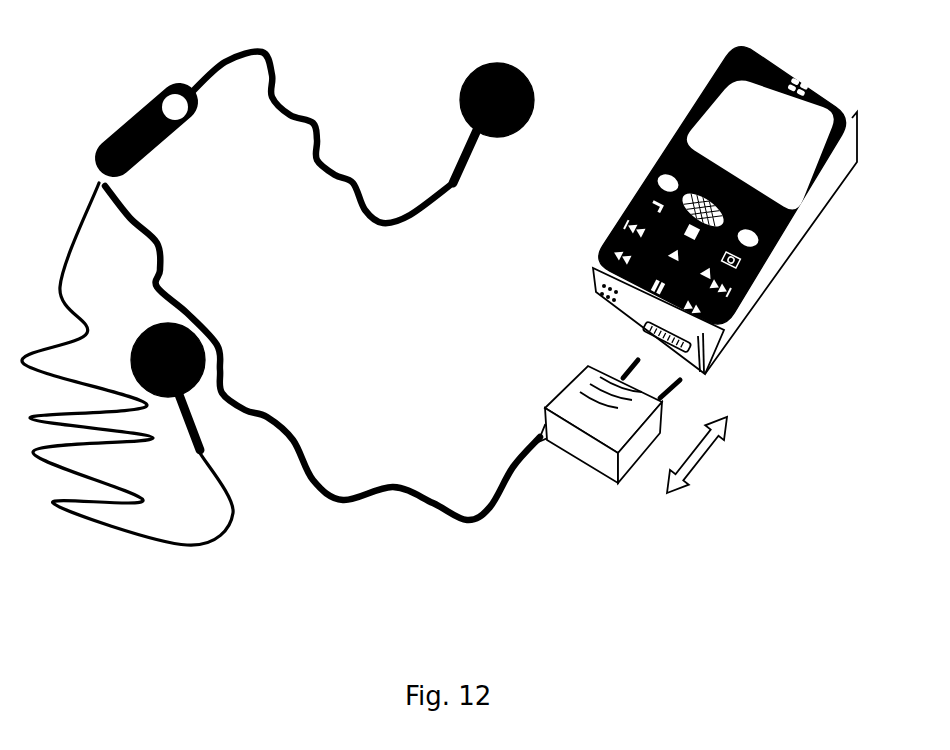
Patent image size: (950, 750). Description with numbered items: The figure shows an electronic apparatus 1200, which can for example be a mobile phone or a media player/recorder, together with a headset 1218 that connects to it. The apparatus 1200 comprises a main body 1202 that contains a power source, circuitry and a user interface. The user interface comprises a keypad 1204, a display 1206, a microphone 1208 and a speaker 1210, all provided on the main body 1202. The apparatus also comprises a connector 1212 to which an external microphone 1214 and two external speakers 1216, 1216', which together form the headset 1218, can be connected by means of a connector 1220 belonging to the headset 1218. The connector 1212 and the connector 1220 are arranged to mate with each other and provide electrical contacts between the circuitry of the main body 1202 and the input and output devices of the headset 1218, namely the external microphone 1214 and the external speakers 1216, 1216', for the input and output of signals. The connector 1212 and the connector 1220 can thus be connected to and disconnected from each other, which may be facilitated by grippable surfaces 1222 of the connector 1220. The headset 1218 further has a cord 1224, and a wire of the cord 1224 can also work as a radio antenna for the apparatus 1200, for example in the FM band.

The electronic apparatus 1200 is at (630, 530).
The main body 1202 is at (818, 200).
The keypad 1204 is at (733, 313).
The display 1206 is at (707, 117).
The microphone 1208 is at (603, 297).
The speaker 1210 is at (837, 53).
The connector 1212 is at (707, 363).
The external microphone 1214 is at (163, 153).
The external speaker 1216 is at (220, 354).
The external speaker 1216' is at (435, 123).
The headset 1218 is at (347, 523).
The connector 1220 is at (572, 390).
The grippable surfaces 1222 is at (593, 393).
The cord 1224 is at (277, 422).